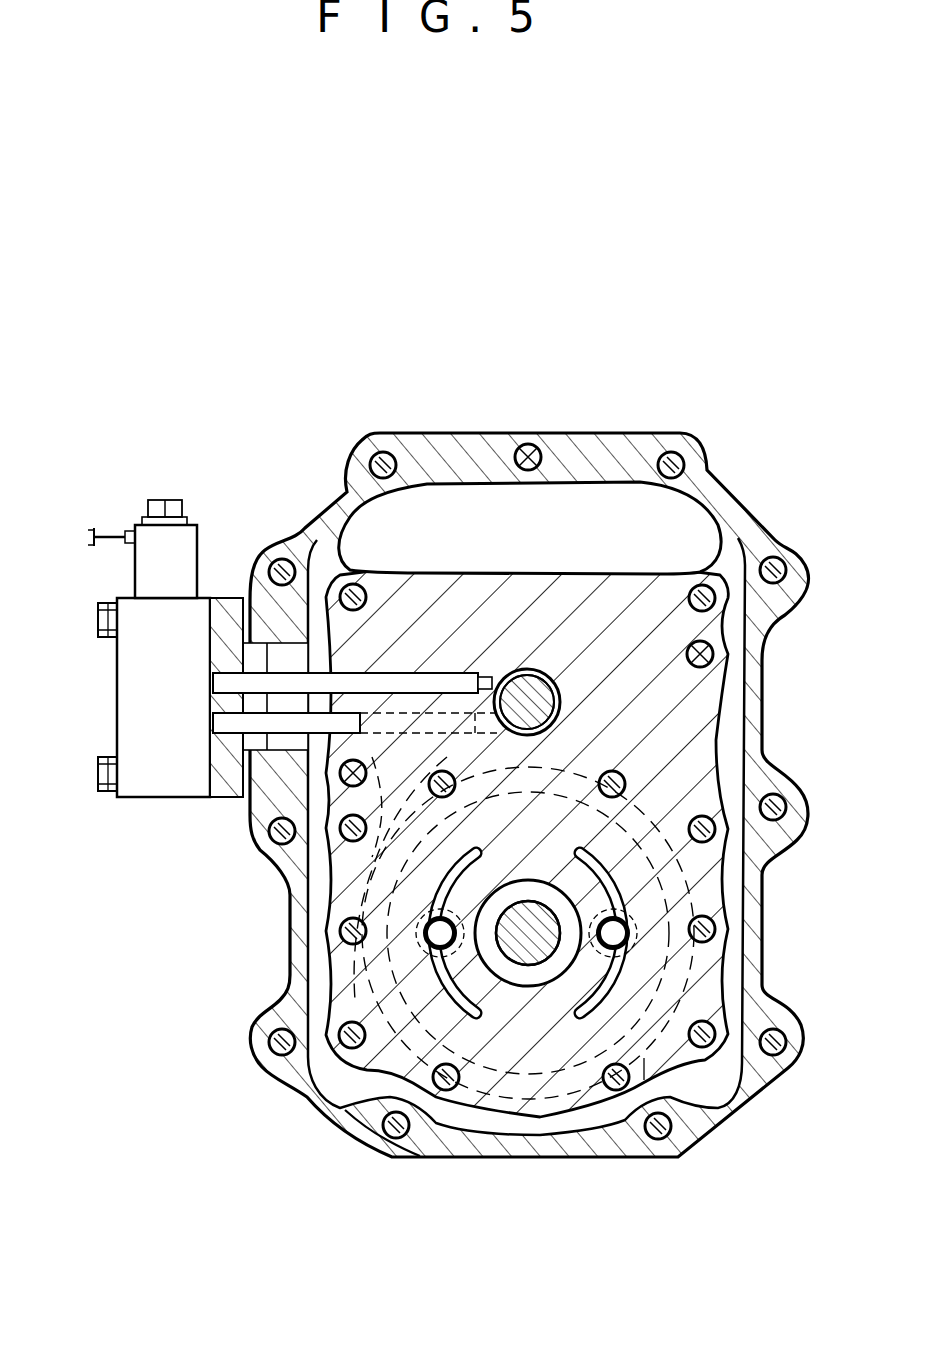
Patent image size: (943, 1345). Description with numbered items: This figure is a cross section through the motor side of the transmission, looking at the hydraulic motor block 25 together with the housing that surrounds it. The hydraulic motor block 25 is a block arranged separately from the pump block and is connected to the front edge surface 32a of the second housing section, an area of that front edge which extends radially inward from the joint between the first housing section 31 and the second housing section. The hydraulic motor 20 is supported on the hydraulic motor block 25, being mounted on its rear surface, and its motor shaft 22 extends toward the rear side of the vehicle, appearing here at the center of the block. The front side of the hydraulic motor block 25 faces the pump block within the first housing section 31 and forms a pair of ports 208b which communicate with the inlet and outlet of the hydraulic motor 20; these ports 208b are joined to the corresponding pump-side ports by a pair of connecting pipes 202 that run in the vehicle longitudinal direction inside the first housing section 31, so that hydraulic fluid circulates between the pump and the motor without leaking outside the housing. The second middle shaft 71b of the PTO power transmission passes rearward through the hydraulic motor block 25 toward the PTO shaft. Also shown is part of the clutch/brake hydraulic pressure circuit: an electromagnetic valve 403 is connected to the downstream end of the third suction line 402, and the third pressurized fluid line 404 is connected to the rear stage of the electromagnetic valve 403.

The hydraulic motor 20 is at (293, 973).
The motor shaft 22 is at (532, 943).
The hydraulic motor block 25 is at (570, 590).
The first housing section 31 is at (442, 1137).
The front edge surface 32a is at (322, 560).
The second middle shaft 71b is at (527, 702).
The connecting pipes 202 is at (740, 830).
The ports 208b is at (428, 936).
The third suction line 402 is at (250, 808).
The electromagnetic valve 403 is at (158, 770).
The third pressurized fluid line 404 is at (276, 723).